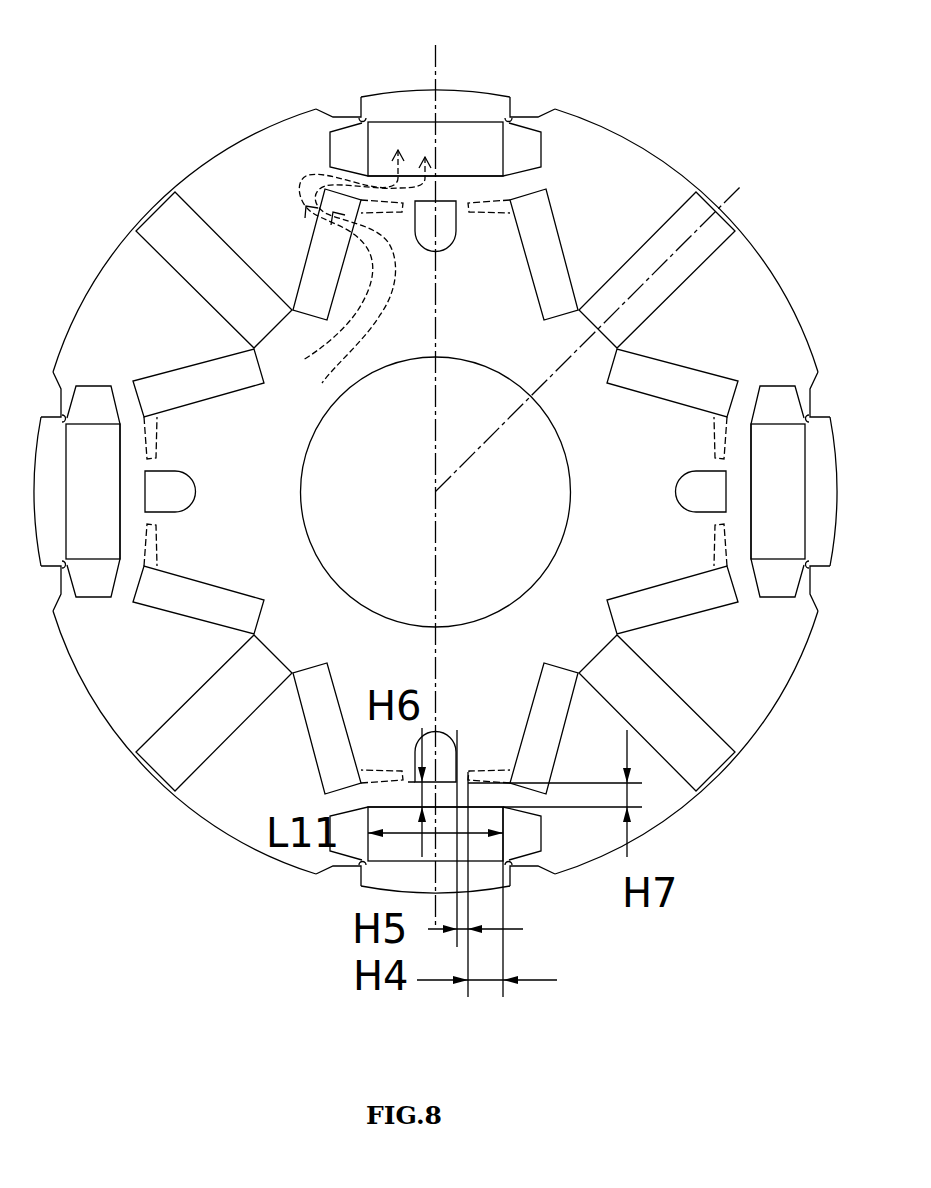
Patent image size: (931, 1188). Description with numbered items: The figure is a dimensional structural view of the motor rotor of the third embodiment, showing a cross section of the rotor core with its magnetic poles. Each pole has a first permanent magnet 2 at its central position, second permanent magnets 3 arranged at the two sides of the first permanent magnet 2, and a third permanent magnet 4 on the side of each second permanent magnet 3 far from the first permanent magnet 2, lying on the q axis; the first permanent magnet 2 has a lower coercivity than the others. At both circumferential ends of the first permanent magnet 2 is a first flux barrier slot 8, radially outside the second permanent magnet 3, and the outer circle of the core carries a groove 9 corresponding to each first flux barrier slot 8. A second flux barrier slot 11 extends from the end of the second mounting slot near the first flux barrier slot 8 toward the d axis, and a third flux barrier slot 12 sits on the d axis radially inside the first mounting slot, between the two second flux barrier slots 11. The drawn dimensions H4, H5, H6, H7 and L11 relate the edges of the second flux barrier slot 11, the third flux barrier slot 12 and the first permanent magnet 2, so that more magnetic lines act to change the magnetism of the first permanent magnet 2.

The first permanent magnet 2 is at (458, 142).
The second permanent magnet 3 is at (320, 248).
The third permanent magnet 4 is at (185, 238).
The first flux barrier slot 8 is at (345, 150).
The groove 9 is at (518, 107).
The second flux barrier slot 11 is at (383, 200).
The third flux barrier slot 12 is at (447, 223).